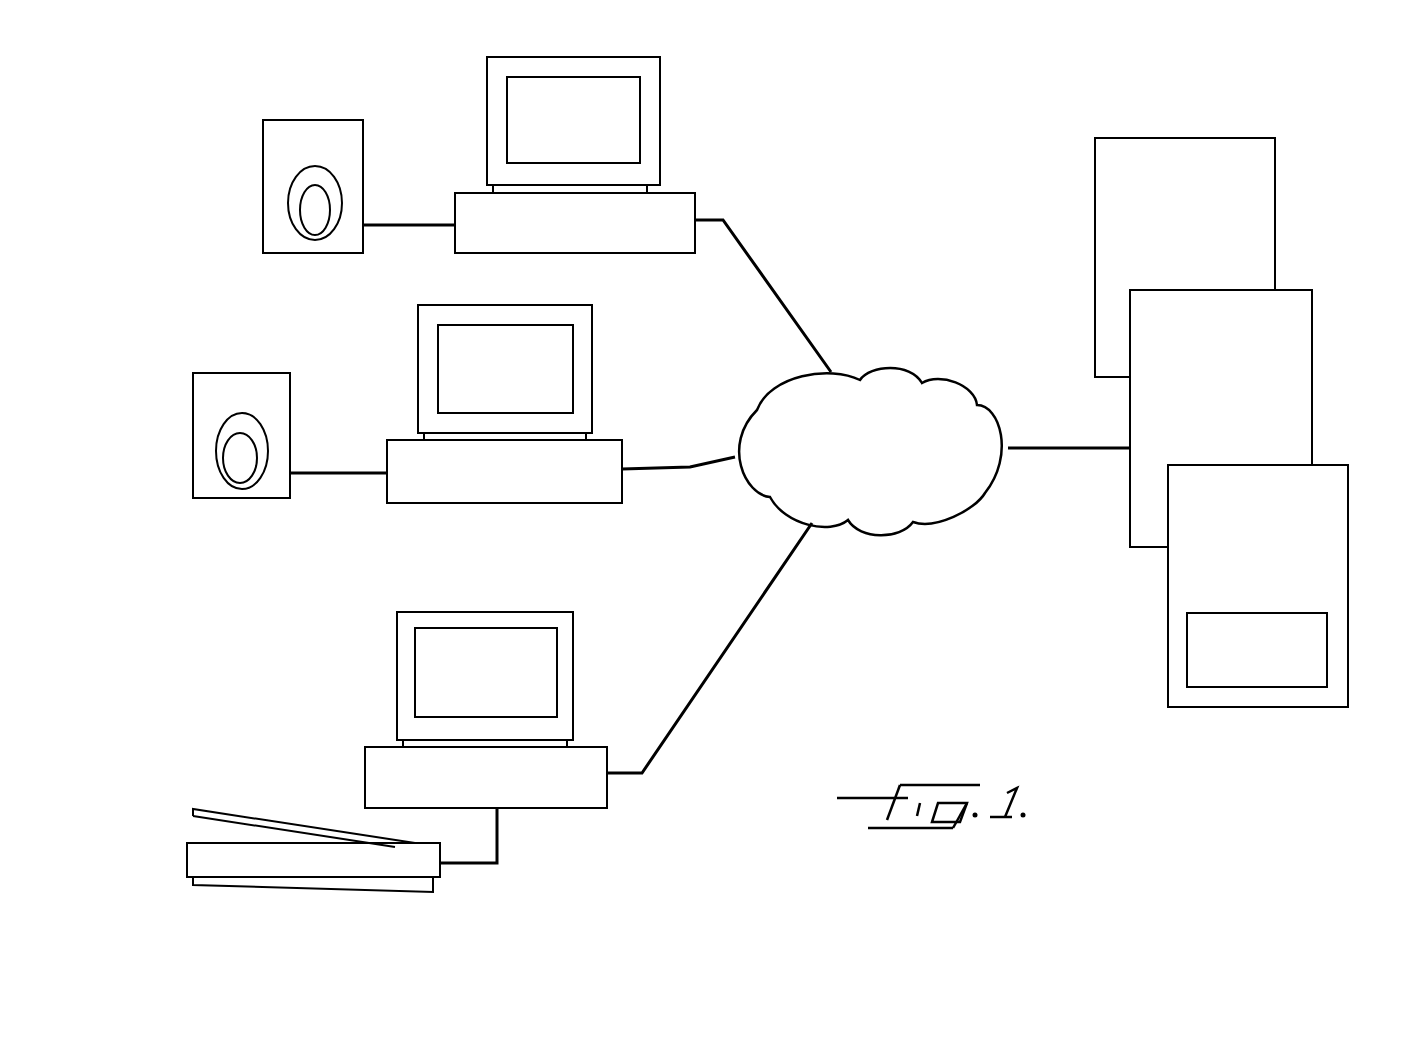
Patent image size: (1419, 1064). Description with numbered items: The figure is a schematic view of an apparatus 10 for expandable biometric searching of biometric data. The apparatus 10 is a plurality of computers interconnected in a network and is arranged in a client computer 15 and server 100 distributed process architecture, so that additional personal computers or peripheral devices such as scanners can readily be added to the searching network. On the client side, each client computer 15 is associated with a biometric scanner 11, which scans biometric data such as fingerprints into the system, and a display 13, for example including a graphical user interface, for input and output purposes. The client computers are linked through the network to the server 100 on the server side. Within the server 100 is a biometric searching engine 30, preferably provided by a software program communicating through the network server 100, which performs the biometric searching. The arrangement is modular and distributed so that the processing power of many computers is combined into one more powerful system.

The apparatus 10 is at (918, 142).
The biometric scanner 11 is at (263, 228).
The display 13 is at (662, 128).
The client computer 15 is at (696, 203).
The server 100 is at (1262, 138).
The biometric searching engine 30 is at (1327, 655).